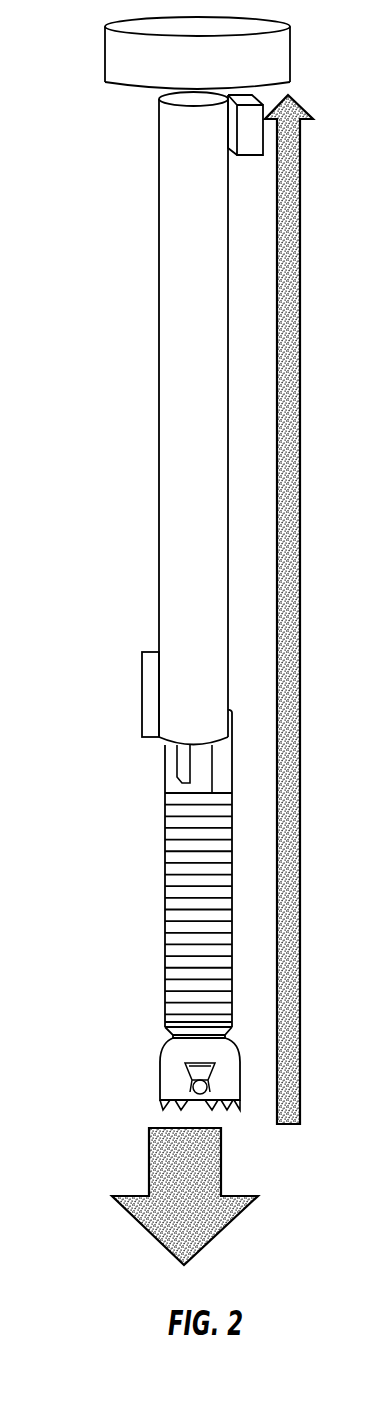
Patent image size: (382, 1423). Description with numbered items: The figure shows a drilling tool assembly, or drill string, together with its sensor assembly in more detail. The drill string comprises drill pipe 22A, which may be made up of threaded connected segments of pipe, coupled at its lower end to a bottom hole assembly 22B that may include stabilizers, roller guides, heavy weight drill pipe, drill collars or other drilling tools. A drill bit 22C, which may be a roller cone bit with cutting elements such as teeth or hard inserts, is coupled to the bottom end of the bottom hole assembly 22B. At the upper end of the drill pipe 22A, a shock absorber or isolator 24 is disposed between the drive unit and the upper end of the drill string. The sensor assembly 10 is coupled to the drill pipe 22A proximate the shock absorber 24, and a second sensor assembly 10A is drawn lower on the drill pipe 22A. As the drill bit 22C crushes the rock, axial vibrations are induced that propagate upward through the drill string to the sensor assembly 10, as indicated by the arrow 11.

The shock absorber or isolator 24 is at (105, 55).
The sensor assembly 10 is at (222, 127).
The drill pipe 22A is at (159, 290).
The arrow 11 is at (277, 484).
The second downhole tool / sensor module 10A is at (142, 675).
The bottom hole assembly 22B is at (165, 950).
The drill bit 22C is at (168, 1078).